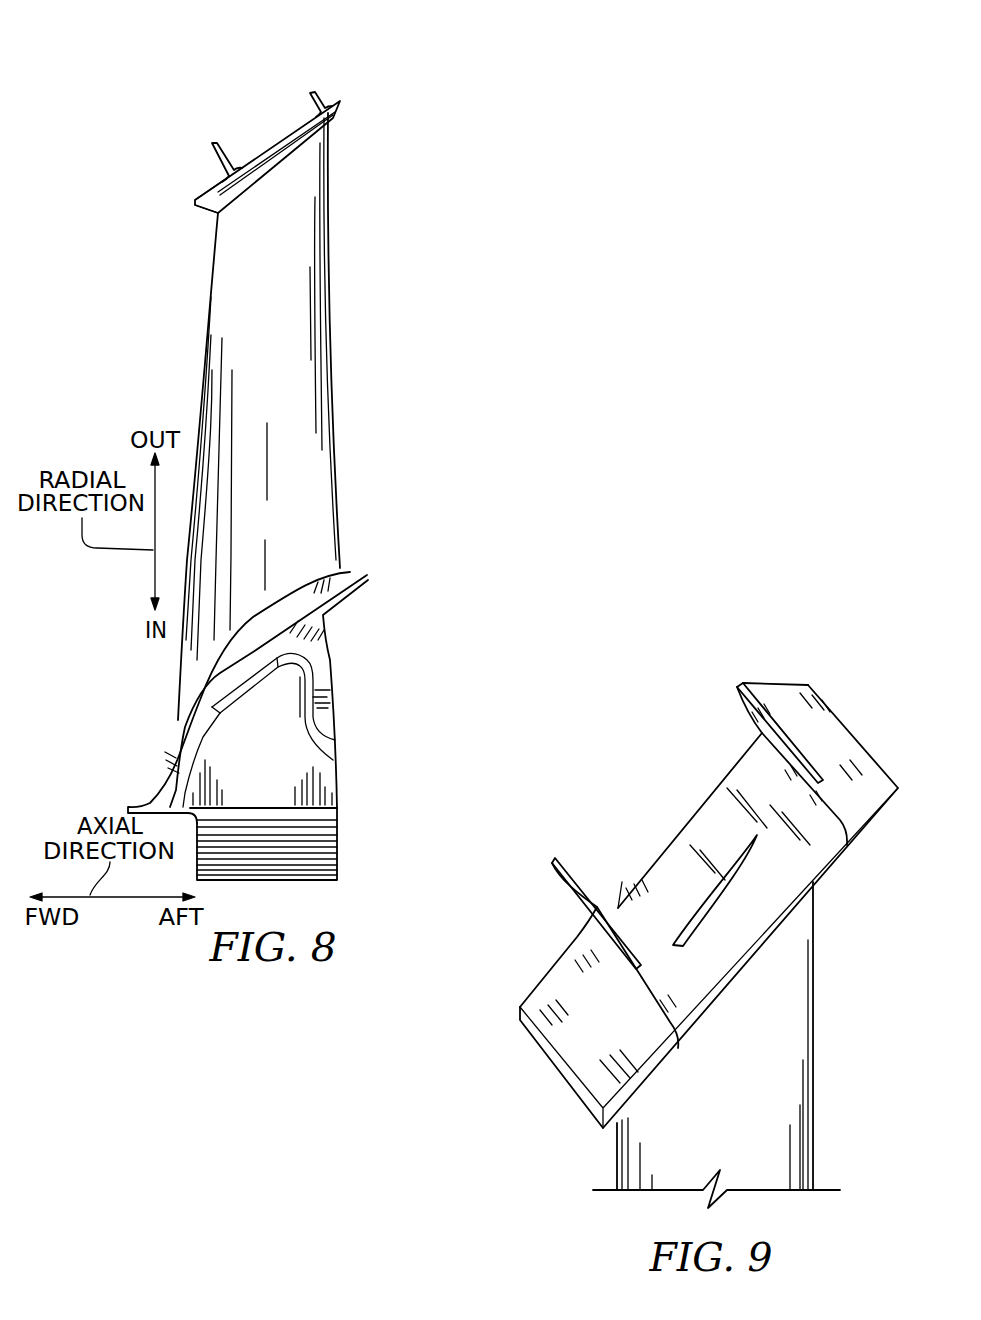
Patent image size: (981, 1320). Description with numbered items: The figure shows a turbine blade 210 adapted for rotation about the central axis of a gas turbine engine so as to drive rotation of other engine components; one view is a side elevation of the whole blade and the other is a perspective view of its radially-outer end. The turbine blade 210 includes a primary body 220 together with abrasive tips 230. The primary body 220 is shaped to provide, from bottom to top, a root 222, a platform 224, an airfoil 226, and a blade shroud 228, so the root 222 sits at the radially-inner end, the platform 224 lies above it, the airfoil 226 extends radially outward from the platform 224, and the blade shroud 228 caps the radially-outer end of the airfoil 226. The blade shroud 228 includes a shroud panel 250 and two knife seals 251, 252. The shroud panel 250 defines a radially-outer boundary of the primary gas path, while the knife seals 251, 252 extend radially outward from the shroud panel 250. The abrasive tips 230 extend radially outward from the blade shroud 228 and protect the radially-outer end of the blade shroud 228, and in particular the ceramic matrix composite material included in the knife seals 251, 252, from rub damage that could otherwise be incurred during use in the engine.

In FIG. 8, the turbine blade 210 is at (545, 100).
In FIG. 9, the turbine blade 210 is at (658, 688).
In FIG. 8, the primary body 220 is at (449, 815).
In FIG. 9, the primary body 220 is at (853, 1021).
In FIG. 8, the root 222 is at (355, 841).
In FIG. 8, the platform 224 is at (353, 612).
In FIG. 8, the airfoil 226 is at (315, 455).
In FIG. 9, the airfoil 226 is at (787, 1103).
In FIG. 8, the blade shroud 228 is at (346, 119).
In FIG. 9, the blade shroud 228 is at (830, 896).
In FIG. 8, the abrasive tips 230 is at (306, 76).
In FIG. 9, the abrasive tips 230 is at (768, 682).
In FIG. 8, the shroud panel 250 is at (197, 182).
In FIG. 9, the shroud panel 250 is at (579, 1045).
In FIG. 8, the knife seal 251 is at (201, 151).
In FIG. 9, the knife seal 251 is at (555, 907).
In FIG. 8, the knife seal 252 is at (298, 105).
In FIG. 9, the knife seal 252 is at (725, 699).